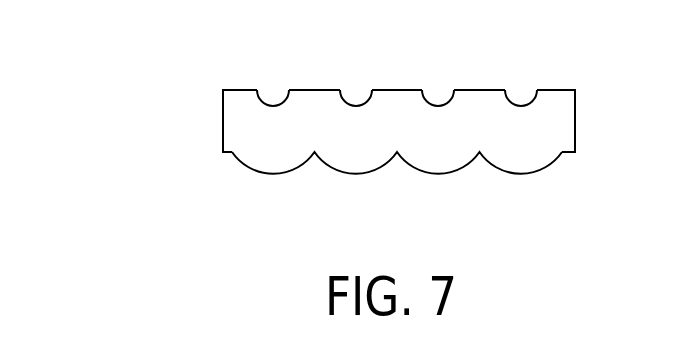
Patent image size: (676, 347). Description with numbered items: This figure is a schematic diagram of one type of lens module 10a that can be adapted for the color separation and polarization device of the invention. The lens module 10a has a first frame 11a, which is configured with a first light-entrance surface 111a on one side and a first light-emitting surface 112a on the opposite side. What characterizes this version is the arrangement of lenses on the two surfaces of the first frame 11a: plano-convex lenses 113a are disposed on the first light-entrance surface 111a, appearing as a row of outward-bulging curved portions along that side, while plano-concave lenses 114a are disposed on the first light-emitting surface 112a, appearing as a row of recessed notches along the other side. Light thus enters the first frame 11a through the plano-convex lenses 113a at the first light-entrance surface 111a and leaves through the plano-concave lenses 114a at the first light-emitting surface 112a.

The lens module 10a is at (107, 82).
The first frame 11a is at (223, 118).
The first light-entrance surface 111a is at (230, 154).
The first light-emitting surface 112a is at (227, 88).
The plano-convex lenses 113a is at (274, 175).
The plano-concave lenses 114a is at (274, 92).